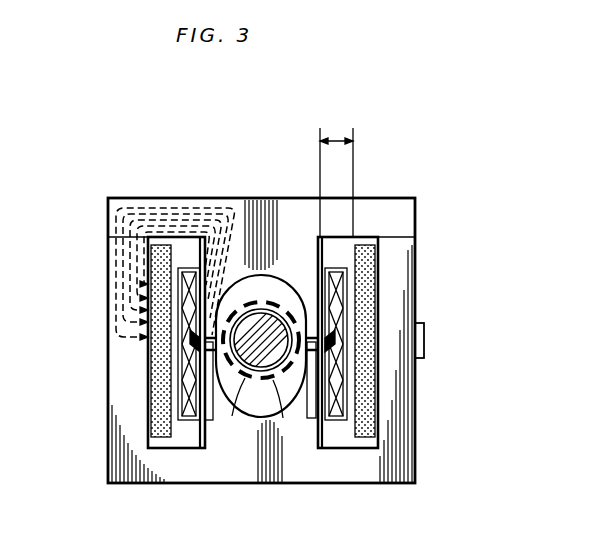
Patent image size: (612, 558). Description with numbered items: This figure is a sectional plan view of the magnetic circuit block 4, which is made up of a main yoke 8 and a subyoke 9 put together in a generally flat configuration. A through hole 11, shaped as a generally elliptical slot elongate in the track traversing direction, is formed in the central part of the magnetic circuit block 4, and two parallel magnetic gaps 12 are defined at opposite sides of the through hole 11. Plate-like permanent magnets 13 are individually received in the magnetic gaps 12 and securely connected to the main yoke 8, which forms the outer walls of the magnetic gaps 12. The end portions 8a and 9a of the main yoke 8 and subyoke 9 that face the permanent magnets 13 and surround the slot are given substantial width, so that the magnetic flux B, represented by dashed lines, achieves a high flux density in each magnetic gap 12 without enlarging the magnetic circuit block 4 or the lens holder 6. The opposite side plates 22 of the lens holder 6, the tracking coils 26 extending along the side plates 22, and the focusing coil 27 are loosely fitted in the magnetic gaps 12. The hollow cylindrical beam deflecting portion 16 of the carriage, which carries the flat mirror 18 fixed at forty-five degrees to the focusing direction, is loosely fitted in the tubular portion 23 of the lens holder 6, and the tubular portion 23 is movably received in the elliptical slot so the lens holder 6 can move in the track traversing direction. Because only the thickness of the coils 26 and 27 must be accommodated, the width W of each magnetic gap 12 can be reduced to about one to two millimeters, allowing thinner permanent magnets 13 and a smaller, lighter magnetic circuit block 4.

The magnetic circuit block 4 is at (406, 185).
The lens holder 6 is at (212, 349).
The main yoke 8 is at (150, 487).
The end portion of main yoke 8a is at (251, 465).
The subyoke 9 is at (210, 195).
The end portion of subyoke 9a is at (272, 265).
The through hole 11 is at (280, 285).
The magnetic gaps 12 is at (190, 245).
The permanent magnets 13 is at (160, 405).
The beam deflecting portion 16 is at (240, 382).
The flat mirror 18 is at (335, 374).
The side plates 22 is at (185, 375).
The tubular portion 23 is at (276, 382).
The tracking coils 26 is at (338, 286).
The focusing coil 27 is at (345, 311).
The magnetic flux B is at (108, 252).
The width of magnetic gap W is at (336, 176).